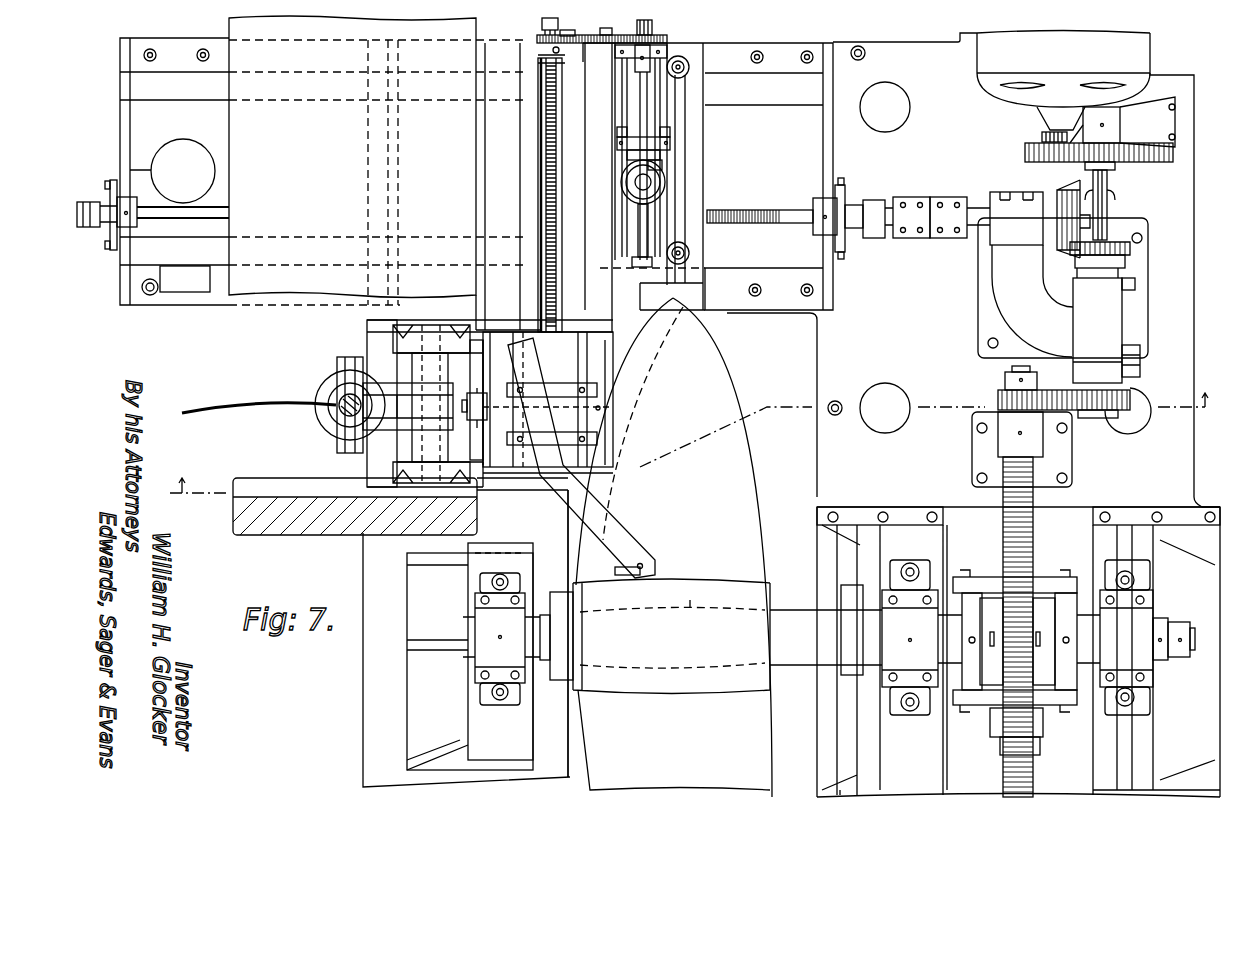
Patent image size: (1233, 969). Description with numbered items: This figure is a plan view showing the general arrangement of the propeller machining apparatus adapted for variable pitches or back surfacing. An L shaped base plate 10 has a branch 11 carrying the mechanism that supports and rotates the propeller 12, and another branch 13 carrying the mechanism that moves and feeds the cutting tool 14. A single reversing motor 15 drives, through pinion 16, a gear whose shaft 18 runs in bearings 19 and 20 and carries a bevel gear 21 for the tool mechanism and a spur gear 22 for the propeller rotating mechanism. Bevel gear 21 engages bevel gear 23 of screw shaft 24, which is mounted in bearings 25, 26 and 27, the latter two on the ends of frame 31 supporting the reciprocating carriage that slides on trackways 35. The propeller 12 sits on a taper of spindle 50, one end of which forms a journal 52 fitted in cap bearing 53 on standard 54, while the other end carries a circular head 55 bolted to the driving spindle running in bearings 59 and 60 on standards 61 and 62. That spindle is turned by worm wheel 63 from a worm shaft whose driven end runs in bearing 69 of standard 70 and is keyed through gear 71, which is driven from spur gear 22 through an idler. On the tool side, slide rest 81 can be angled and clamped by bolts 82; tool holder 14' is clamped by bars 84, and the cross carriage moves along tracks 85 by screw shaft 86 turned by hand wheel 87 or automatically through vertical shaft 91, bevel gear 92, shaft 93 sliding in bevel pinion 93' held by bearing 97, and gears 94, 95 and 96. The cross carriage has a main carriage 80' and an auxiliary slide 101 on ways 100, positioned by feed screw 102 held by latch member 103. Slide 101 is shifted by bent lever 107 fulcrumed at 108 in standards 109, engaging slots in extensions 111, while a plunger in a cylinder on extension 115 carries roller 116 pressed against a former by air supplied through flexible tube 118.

The base plate 10 is at (1182, 264).
The branch 11 is at (880, 440).
The propeller 12 is at (770, 498).
The branch 13 is at (740, 313).
The cutting tool 14 is at (656, 556).
The tool holder 14' is at (592, 458).
The motor 15 is at (1063, 69).
The pinion 16 is at (1040, 137).
The shaft 18 is at (1107, 196).
The bearing 19 is at (1105, 118).
The bearing 20 is at (1103, 322).
The bevel gear 21 is at (1131, 250).
The spur gear 22 is at (1140, 420).
The bevel gear 23 is at (1068, 188).
The screw shaft 24 is at (781, 209).
The bearing 25 is at (1013, 192).
The bearing 26 is at (852, 230).
The bearing 27 is at (113, 246).
The frame 31 is at (176, 50).
The trackways 35 is at (708, 176).
The spindle 50 is at (671, 684).
The journal 52 is at (470, 628).
The cap bearing 53 is at (492, 640).
The standard 54 is at (407, 594).
The circular head 55 is at (830, 626).
The bearing 59 is at (910, 637).
The bearing 60 is at (1147, 637).
The standard 61 is at (900, 705).
The standard 62 is at (1172, 772).
The worm wheel 63 is at (1035, 527).
The bearing 69 is at (1020, 433).
The standard 70 is at (1057, 470).
The gear 71 is at (1000, 396).
The main carriage 80' is at (525, 322).
The slide rest 81 is at (705, 62).
The bolts 82 is at (686, 75).
The bars 84 is at (556, 383).
The tracks 85 is at (523, 168).
The screw shaft 86 is at (540, 206).
The hand wheel 87 is at (541, 24).
The vertical shaft 91 is at (652, 182).
The bevel gear 92 is at (650, 208).
The shaft 93 is at (626, 152).
The bevel pinion 93' is at (694, 151).
The gear 94 is at (652, 27).
The gear 95 is at (618, 30).
The gear 96 is at (553, 51).
The bearing 97 is at (624, 146).
The ways 100 is at (600, 432).
The auxiliary slide 101 is at (600, 362).
The feed screw 102 is at (600, 408).
The latch member 103 is at (475, 425).
The bent lever 107 is at (372, 455).
The fulcrum 108 is at (400, 345).
The standards 109 is at (430, 330).
The extensions 111 is at (474, 366).
The extension 115 is at (320, 392).
The roller 116 is at (343, 414).
The flexible tube 118 is at (202, 418).